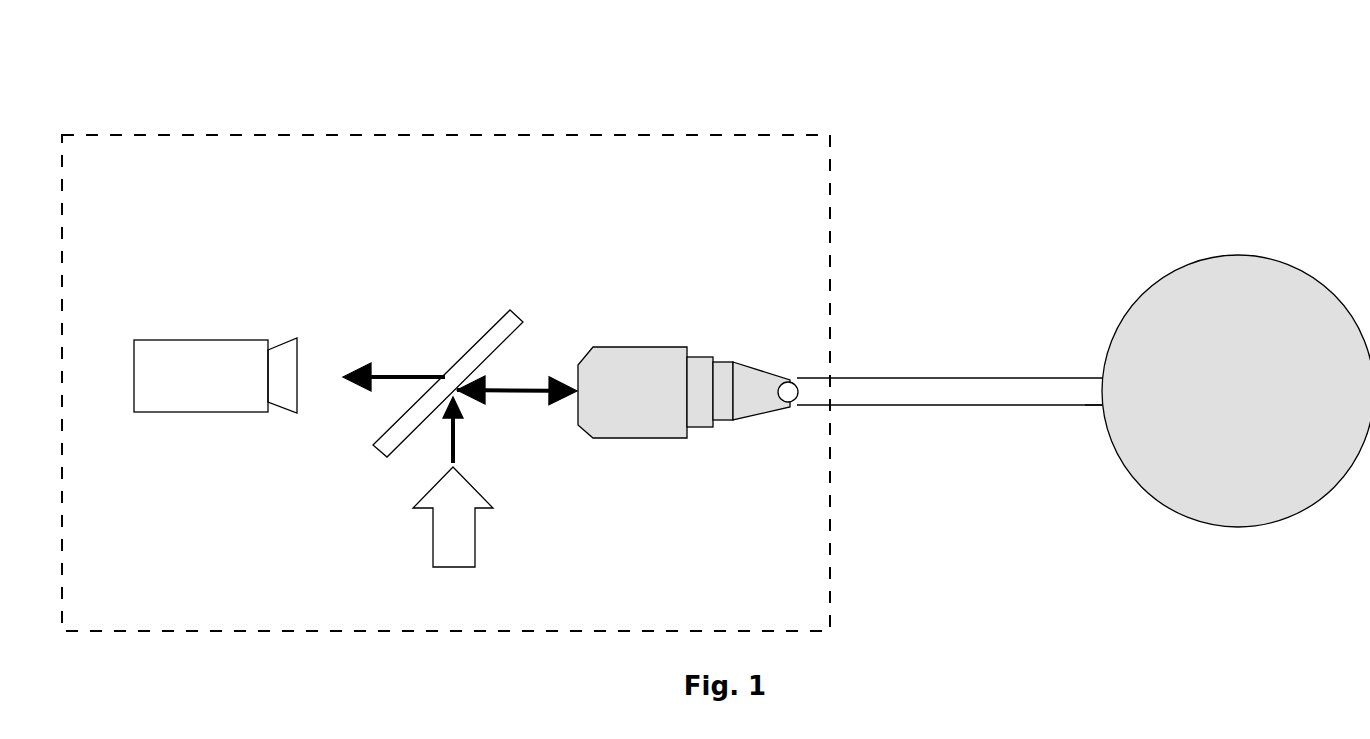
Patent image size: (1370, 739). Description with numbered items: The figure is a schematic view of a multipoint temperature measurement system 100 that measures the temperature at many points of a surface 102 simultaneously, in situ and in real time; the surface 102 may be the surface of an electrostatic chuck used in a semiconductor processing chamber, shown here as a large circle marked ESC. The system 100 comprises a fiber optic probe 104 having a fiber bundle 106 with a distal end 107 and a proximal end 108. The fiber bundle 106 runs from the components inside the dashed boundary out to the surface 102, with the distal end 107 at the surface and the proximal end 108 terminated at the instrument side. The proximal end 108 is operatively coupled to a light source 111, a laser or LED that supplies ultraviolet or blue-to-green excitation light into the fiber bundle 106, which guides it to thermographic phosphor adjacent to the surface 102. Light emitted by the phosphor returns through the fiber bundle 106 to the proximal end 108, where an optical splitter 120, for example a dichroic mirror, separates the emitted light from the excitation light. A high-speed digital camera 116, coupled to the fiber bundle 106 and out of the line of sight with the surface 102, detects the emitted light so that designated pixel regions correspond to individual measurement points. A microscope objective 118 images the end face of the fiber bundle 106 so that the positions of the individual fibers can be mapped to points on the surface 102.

The multipoint temperature measurement system 100 is at (711, 112).
The surface 102 is at (1129, 283).
The fiber optic probe 104 is at (987, 354).
The fiber bundle 106 is at (947, 419).
The distal end 107 is at (1098, 419).
The proximal end 108 is at (776, 416).
The light source 111 is at (453, 509).
The high-speed digital camera 116 is at (202, 327).
The microscope objective 118 is at (635, 332).
The optical splitter 120 is at (476, 314).